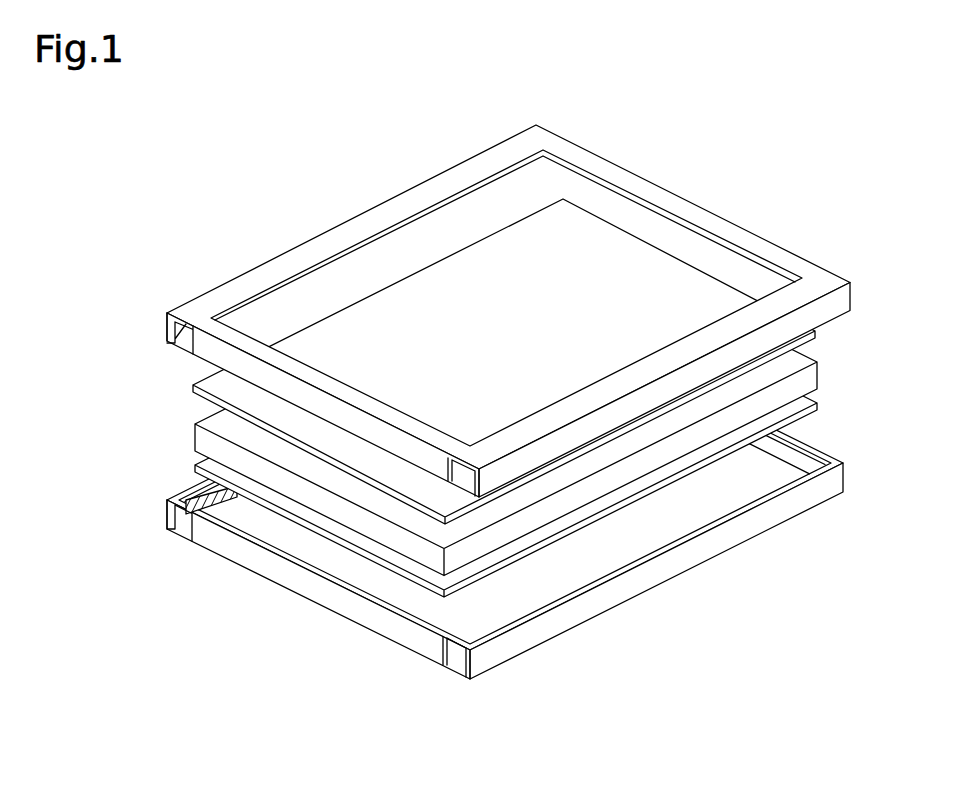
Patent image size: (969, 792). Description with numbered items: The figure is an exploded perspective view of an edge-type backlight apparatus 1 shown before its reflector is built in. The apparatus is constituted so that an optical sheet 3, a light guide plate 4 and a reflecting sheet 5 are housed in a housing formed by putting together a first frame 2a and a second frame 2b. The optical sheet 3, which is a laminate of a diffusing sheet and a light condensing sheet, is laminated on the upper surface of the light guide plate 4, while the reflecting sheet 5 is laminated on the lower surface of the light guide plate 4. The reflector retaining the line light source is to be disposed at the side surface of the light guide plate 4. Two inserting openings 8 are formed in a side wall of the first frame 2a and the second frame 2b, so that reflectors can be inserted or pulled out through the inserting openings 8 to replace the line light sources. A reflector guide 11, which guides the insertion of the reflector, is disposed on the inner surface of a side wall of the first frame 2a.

The backlight apparatus 1 is at (501, 424).
The first frame 2a is at (808, 496).
The second frame 2b is at (652, 392).
The optical sheet 3 is at (453, 508).
The light guide plate 4 is at (642, 463).
The reflecting sheet 5 is at (605, 517).
The inserting openings 8 is at (168, 342).
The reflector guide 11 is at (170, 529).